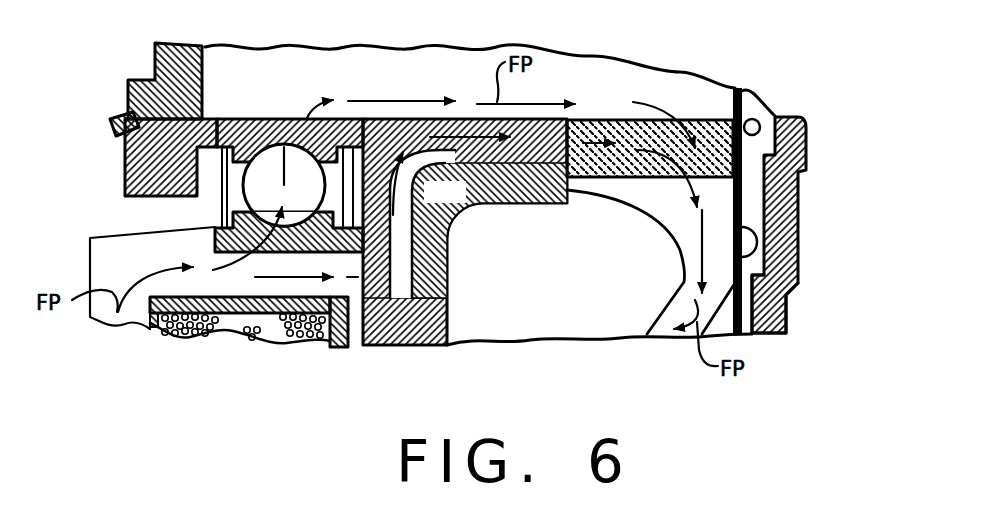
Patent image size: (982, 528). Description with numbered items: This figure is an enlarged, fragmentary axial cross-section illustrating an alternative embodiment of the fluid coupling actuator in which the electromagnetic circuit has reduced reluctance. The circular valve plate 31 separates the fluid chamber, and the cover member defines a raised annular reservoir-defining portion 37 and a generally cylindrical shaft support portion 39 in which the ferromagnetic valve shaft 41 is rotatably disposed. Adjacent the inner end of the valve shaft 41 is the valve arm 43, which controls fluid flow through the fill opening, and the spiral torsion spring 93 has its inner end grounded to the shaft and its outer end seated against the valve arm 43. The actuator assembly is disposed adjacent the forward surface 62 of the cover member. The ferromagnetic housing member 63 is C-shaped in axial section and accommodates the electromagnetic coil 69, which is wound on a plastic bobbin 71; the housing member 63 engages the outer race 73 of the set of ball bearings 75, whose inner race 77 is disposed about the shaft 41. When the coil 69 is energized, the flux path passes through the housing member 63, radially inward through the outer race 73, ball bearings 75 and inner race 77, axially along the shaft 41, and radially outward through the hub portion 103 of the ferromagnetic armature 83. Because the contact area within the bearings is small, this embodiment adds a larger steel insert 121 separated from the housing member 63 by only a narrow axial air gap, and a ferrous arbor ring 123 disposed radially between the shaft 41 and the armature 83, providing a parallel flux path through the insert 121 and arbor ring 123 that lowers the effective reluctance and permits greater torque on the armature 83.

The valve plate 31 is at (799, 272).
The reservoir-defining portion 37 is at (418, 344).
The shaft support portion 39 is at (500, 203).
The valve shaft 41 is at (288, 72).
The valve arm 43 is at (768, 197).
The forward surface 62 is at (357, 337).
The housing member 63 is at (118, 253).
The electromagnetic coil 69 is at (286, 338).
The bobbin 71 is at (155, 322).
The outer race 73 is at (212, 243).
The ball bearings 75 is at (215, 178).
The inner race 77 is at (252, 128).
The armature 83 is at (640, 312).
The torsion spring 93 is at (758, 118).
The hub portion 103 is at (647, 198).
The steel insert 121 is at (412, 282).
The arbor ring 123 is at (710, 130).